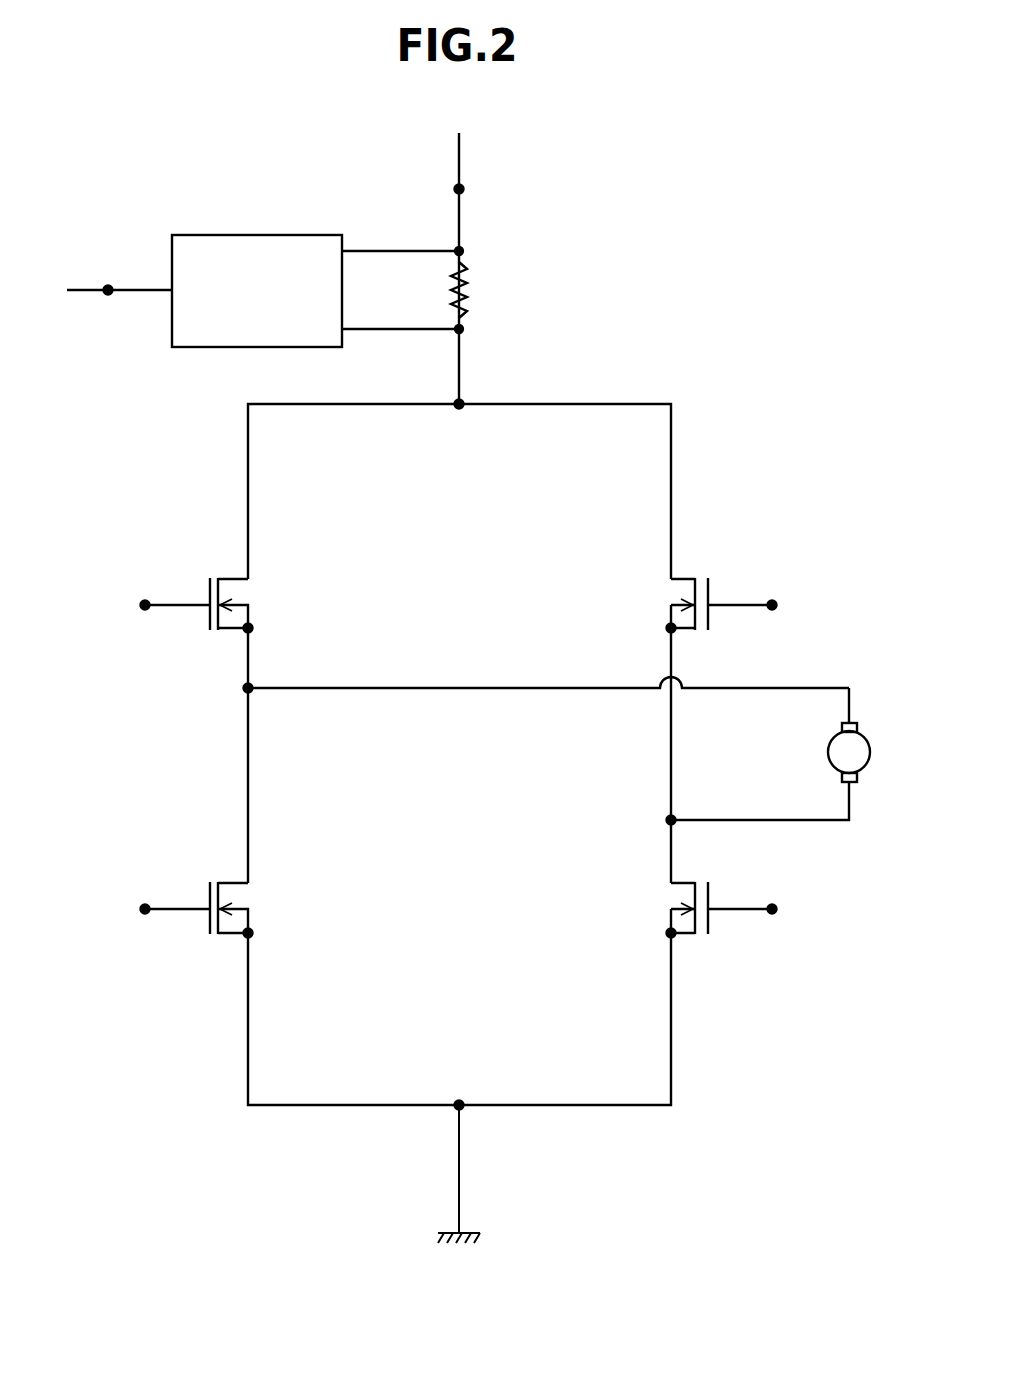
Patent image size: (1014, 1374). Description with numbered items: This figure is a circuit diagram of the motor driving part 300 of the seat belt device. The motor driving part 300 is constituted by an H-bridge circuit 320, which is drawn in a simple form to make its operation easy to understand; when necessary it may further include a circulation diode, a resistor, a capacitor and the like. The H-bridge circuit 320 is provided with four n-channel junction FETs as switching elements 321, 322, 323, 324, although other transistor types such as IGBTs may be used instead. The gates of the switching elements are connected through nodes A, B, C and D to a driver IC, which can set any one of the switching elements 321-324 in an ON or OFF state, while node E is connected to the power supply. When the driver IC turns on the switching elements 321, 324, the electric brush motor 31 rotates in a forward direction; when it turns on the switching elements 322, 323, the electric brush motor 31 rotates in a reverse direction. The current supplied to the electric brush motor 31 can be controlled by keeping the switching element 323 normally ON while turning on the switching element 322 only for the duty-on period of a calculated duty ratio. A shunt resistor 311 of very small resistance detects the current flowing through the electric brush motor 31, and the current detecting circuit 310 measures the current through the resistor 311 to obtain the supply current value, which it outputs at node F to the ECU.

The motor driving part 300 is at (720, 163).
The current detecting circuit 310 is at (257, 235).
The resistor 311 is at (468, 290).
The H-bridge circuit 320 is at (676, 333).
The switching element 321 is at (217, 575).
The switching element 322 is at (703, 577).
The switching element 323 is at (215, 938).
The switching element 324 is at (703, 937).
The electric brush motor 31 is at (827, 748).